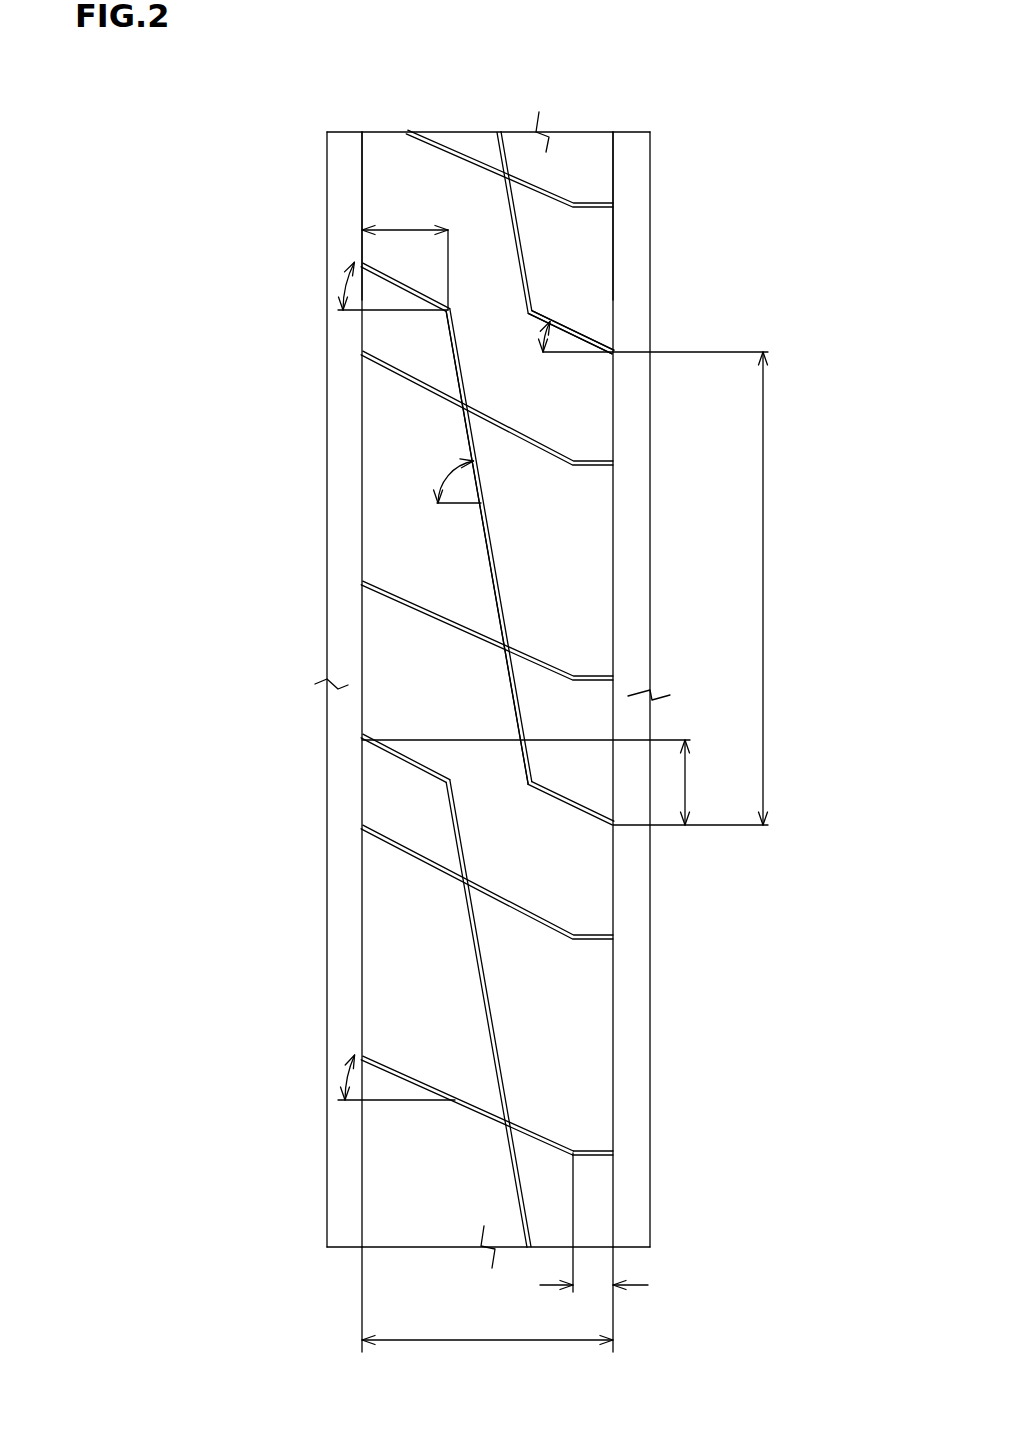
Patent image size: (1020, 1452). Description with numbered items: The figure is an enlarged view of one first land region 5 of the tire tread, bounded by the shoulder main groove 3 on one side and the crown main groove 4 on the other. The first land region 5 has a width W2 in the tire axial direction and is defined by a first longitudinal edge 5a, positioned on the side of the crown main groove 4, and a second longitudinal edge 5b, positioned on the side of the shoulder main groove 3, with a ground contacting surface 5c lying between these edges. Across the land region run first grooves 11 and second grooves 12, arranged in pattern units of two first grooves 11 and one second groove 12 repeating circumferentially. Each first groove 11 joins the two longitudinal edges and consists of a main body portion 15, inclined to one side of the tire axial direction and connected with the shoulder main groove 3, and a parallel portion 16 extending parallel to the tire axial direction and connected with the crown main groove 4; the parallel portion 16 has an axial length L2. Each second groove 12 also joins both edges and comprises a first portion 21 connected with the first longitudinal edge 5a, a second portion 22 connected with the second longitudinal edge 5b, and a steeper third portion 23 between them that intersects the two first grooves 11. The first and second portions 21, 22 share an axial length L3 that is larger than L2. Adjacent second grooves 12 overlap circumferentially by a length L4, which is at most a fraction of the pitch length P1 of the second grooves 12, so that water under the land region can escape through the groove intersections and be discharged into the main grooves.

The shoulder main groove 3 is at (343, 158).
The crown main groove 4 is at (632, 160).
The first land region 5 is at (457, 198).
The first longitudinal edge 5a is at (613, 233).
The second longitudinal edge 5b is at (362, 182).
The ground contacting surface 5c is at (567, 160).
The first groove 11 is at (410, 380).
The second groove 12 is at (497, 604).
The main body portion 15 is at (540, 1137).
The parallel portion 16 is at (600, 1152).
The first portion 21 is at (582, 331).
The second portion 22 is at (403, 283).
The third portion 23 is at (487, 540).
The length in the tire axial direction of the parallel portion L2 is at (594, 1252).
The length in the tire axial direction of the first portion or second portion L3 is at (405, 254).
The overlapping length L4 is at (543, 782).
The width in the tire axial direction of the first land region W2 is at (487, 1309).
The pitch length P1 is at (711, 588).